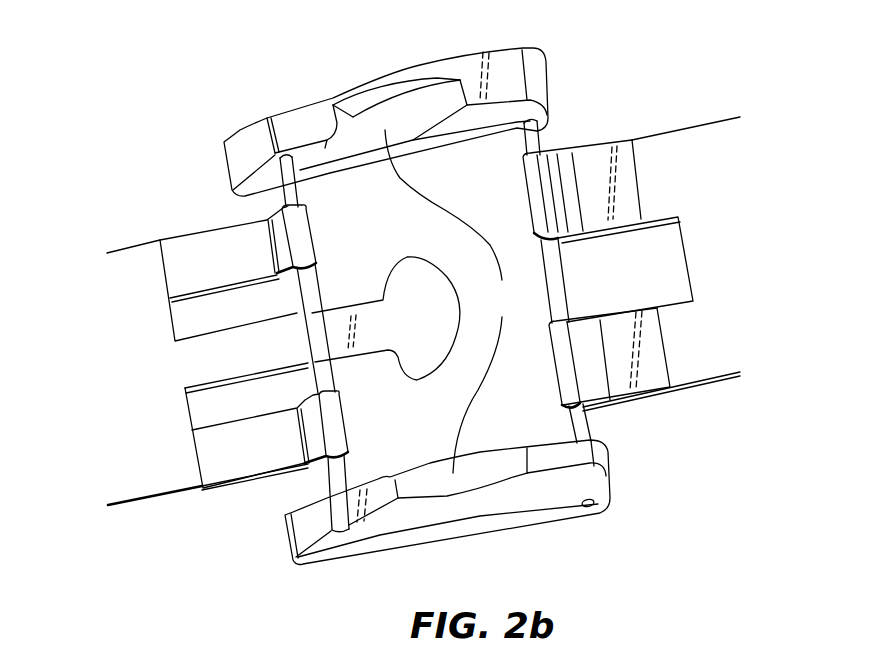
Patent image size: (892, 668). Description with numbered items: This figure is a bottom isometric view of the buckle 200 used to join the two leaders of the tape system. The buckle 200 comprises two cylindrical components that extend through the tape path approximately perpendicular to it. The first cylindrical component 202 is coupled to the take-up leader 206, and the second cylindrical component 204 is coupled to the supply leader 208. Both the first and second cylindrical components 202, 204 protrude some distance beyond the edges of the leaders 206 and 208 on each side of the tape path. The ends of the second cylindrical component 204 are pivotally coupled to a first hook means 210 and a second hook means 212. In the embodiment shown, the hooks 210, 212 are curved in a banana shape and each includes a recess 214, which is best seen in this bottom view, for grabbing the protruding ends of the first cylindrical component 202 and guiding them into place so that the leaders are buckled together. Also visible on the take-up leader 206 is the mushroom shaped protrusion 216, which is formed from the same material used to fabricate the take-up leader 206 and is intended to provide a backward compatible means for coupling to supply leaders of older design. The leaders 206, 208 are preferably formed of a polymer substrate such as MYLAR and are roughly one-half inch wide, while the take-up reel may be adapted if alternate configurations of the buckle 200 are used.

The buckle 200 is at (493, 533).
The first cylindrical component 202 is at (297, 303).
The second cylindrical component 204 is at (555, 293).
The take-up leader 206 is at (717, 373).
The supply leader 208 is at (148, 490).
The first hook means 210 is at (347, 547).
The second hook means 212 is at (300, 108).
The recesses 214 is at (455, 301).
The mushroom shaped protrusion 216 is at (428, 335).